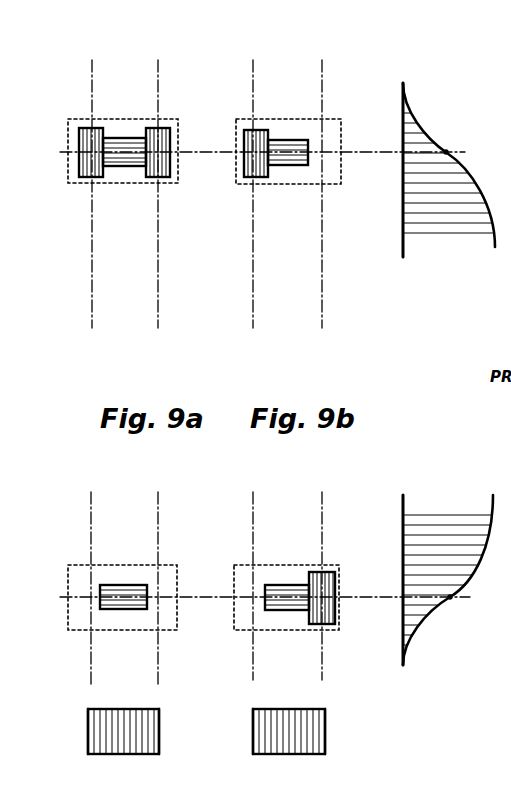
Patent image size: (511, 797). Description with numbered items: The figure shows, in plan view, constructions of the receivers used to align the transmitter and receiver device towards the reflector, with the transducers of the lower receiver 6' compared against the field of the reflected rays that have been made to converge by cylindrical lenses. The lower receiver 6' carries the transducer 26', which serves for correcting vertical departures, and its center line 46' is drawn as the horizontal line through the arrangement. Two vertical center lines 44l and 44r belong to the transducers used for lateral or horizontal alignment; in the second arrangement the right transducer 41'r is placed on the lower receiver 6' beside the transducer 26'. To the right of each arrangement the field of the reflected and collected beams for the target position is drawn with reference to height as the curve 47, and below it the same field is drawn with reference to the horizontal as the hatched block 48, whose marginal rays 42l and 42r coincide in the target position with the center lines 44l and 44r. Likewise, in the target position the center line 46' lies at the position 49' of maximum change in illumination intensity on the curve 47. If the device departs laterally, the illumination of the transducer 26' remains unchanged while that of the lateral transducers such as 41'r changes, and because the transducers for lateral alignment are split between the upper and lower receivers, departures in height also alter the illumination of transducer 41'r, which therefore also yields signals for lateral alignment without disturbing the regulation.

In FIG. 9A, the center line 44l is at (92, 312).
In FIG. 9B, the center line 44l is at (91, 492).
In FIG. 9A, the center line 44r is at (158, 312).
In FIG. 9B, the center line 44r is at (158, 492).
In FIG. 9A, the field of reflected and collected beams 47 is at (490, 237).
In FIG. 9B, the field of reflected and collected beams 47 is at (492, 505).
In FIG. 9B, the lower receiver 6' is at (203, 579).
In FIG. 9B, the transducer 26' is at (204, 566).
In FIG. 9B, the right transducer 41'r is at (307, 624).
In FIG. 9B, the center line 46' is at (265, 621).
In FIG. 9B, the position of maximum intensity change 49' is at (460, 620).
In FIG. 9B, the field of reflected and collected beams 48 is at (128, 709).
In FIG. 9B, the left marginal ray 42l is at (88, 735).
In FIG. 9B, the right marginal ray 42r is at (159, 736).